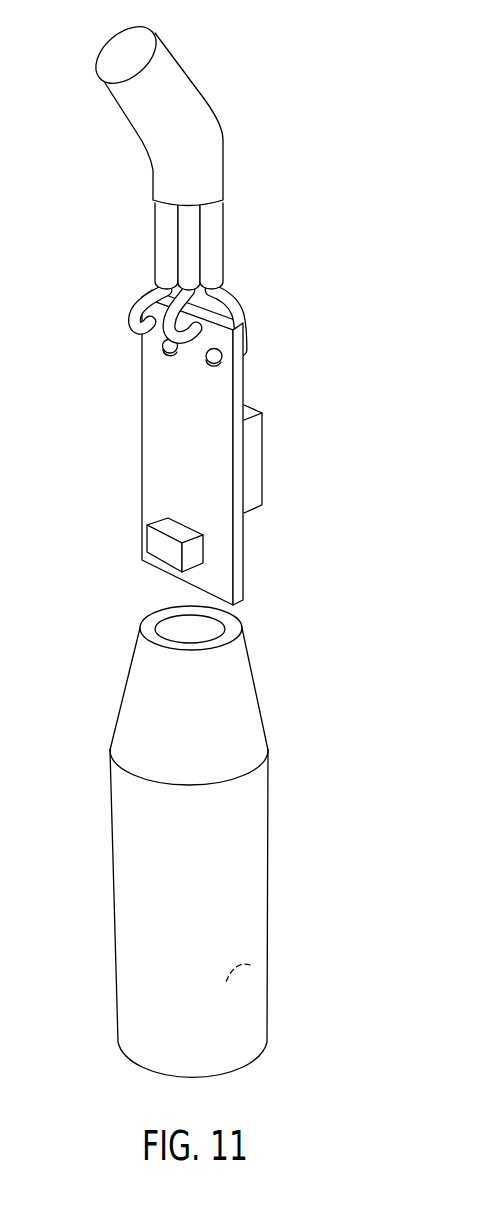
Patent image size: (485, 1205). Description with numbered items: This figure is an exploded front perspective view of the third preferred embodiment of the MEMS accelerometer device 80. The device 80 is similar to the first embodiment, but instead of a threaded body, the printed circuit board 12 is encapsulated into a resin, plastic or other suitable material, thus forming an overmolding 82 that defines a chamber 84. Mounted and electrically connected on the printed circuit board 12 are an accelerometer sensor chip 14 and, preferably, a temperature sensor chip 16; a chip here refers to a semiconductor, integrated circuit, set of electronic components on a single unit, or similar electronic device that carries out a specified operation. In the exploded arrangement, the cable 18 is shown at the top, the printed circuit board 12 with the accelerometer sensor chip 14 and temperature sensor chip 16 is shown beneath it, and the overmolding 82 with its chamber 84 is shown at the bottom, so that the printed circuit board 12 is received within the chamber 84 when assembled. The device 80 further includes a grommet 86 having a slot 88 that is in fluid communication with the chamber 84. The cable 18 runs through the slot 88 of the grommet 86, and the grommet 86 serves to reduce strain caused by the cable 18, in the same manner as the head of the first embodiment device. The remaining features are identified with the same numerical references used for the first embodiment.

The MEMS accelerometer device 80 is at (330, 162).
The cable 18 is at (198, 120).
The printed circuit board 12 is at (155, 382).
The accelerometer sensor chip 14 is at (253, 460).
The temperature sensor chip 16 is at (155, 545).
The overmolding 82 is at (113, 915).
The chamber 84 is at (250, 965).
The grommet 86 is at (242, 692).
The slot 88 is at (263, 763).